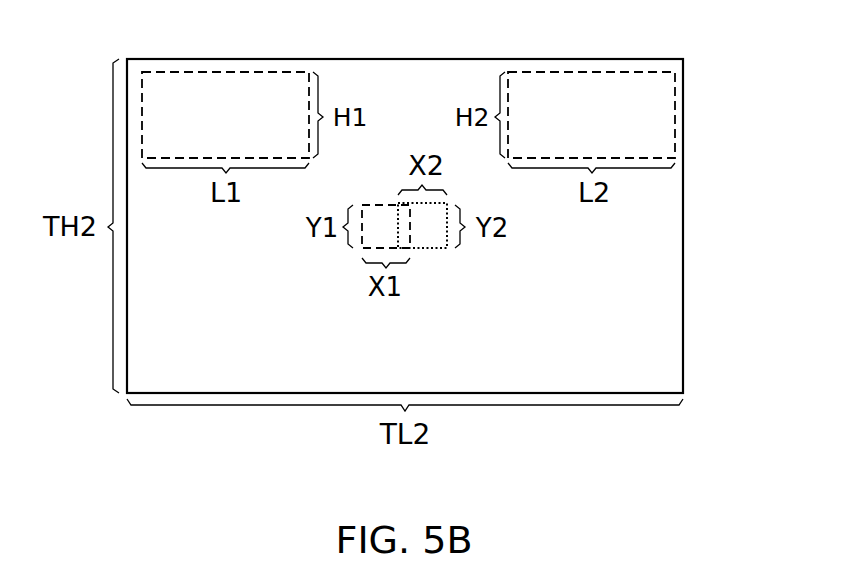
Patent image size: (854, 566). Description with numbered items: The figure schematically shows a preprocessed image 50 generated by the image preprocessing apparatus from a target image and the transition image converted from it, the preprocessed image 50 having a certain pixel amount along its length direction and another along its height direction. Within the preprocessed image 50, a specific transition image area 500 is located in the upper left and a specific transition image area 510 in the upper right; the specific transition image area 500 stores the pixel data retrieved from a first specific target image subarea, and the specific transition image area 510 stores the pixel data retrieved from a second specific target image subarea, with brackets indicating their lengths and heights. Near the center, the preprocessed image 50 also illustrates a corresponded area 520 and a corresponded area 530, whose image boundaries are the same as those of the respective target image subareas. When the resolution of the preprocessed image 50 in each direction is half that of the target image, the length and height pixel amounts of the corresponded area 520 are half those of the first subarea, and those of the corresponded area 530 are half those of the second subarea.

The preprocessed image 50 is at (683, 228).
The specific transition image area 500 is at (221, 78).
The specific transition image area 510 is at (588, 78).
The corresponded area 520 is at (378, 206).
The corresponded area 530 is at (430, 243).